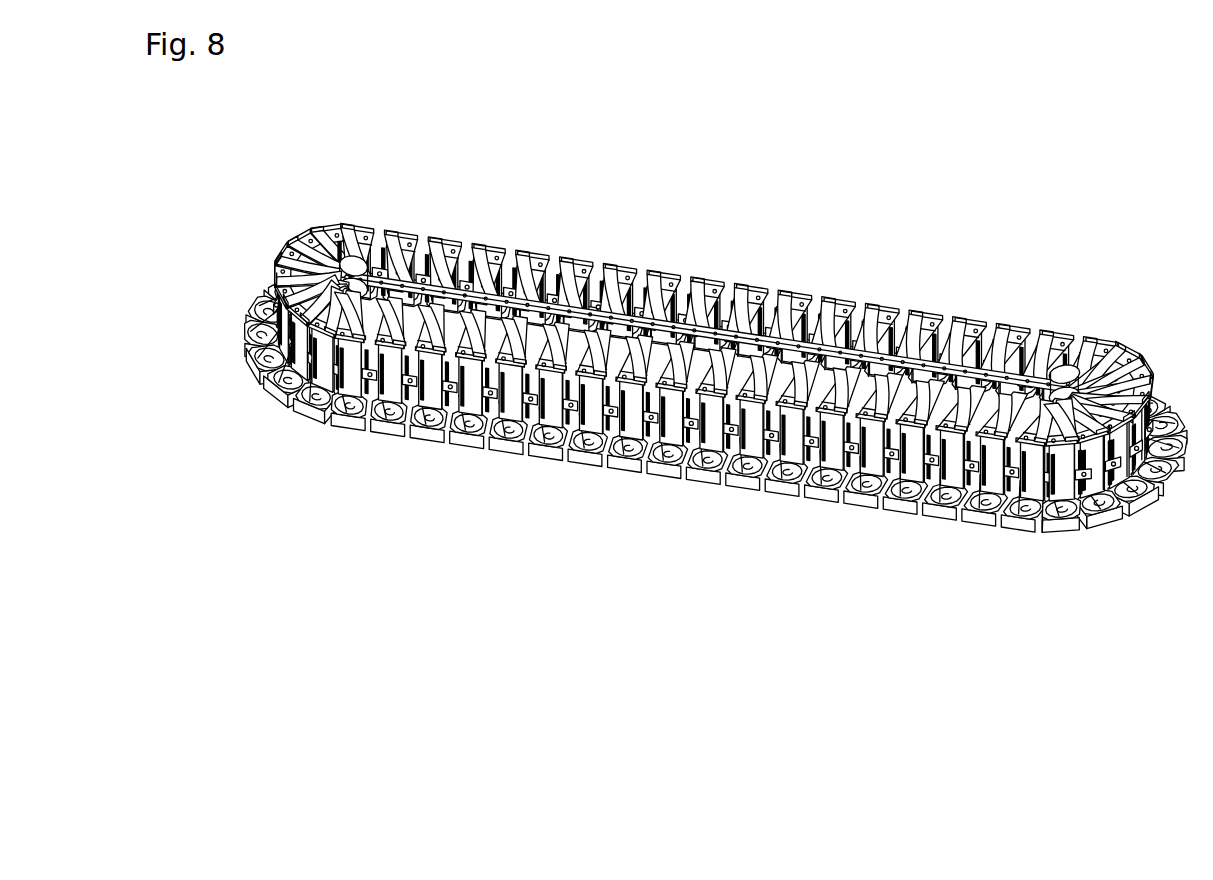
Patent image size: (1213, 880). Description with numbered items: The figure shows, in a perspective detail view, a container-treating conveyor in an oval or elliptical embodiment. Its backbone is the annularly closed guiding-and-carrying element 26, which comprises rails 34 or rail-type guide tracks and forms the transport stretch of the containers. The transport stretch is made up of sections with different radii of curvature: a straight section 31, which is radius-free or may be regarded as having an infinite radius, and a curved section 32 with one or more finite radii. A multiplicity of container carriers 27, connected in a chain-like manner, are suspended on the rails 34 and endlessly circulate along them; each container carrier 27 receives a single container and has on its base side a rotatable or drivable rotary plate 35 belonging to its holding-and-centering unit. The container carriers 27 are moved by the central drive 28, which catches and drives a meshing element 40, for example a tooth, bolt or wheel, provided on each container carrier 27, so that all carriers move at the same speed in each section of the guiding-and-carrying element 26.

The guiding-and-carrying element 26 is at (494, 234).
The container carrier 27 is at (918, 304).
The central drive 28 is at (783, 287).
The straight section 31 is at (487, 494).
The curved section 32 is at (1130, 328).
The rails 34 is at (530, 262).
The rotary plate 35 is at (986, 508).
The meshing element 40 is at (955, 322).